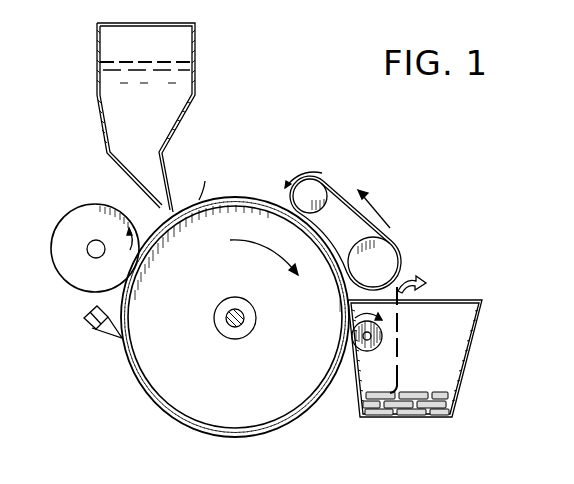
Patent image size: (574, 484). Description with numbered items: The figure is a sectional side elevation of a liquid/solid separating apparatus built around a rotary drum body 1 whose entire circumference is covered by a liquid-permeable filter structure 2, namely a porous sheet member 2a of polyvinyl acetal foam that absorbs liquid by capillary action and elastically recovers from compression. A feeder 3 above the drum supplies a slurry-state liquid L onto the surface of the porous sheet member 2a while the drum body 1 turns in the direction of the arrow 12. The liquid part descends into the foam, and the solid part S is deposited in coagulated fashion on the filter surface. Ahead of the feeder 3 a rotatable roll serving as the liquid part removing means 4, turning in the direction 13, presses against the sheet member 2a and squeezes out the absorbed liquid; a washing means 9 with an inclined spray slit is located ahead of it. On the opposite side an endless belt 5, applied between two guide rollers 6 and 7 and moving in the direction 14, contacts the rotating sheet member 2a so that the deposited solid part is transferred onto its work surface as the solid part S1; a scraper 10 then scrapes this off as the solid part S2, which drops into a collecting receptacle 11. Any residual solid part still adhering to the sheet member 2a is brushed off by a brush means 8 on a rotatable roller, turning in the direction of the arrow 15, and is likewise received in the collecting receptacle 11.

The rotary drum body 1 is at (202, 410).
The liquid-permeable filter structure 2 is at (133, 387).
The porous sheet member 2a is at (265, 430).
The feeder 3 is at (185, 43).
The slurry-state liquid L is at (110, 82).
The liquid part removing means 4 is at (72, 213).
The direction of rotation of liquid part removing means 13 is at (127, 265).
The washing means 9 is at (92, 327).
The arrow indicating drum rotation direction 12 is at (257, 247).
The solid part S is at (210, 180).
The endless belt 5 is at (342, 193).
The guide roller 6 is at (322, 183).
The guide roller 7 is at (393, 260).
The direction of endless belt movement 14 is at (390, 222).
The scraper 10 is at (425, 280).
The collecting receptacle 11 is at (475, 345).
The arrow indicating brush rotation direction 15 is at (400, 322).
The brush means 8 is at (352, 342).
The solid part carried on endless belt S1 is at (340, 305).
The solid part scraped off endless belt S2 is at (399, 367).